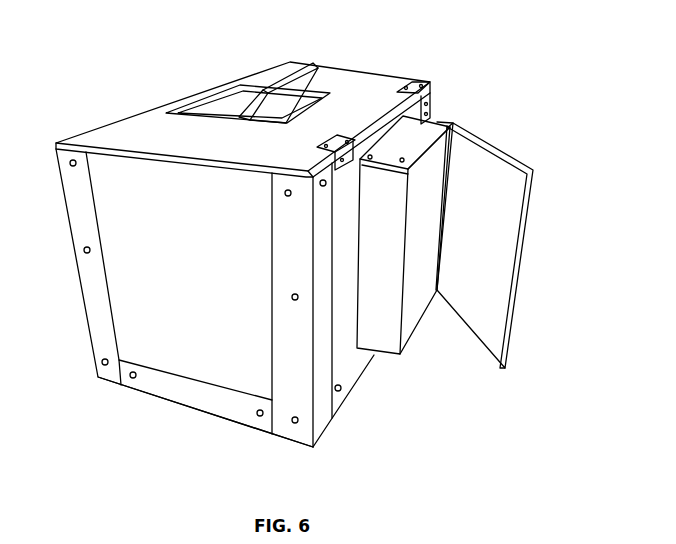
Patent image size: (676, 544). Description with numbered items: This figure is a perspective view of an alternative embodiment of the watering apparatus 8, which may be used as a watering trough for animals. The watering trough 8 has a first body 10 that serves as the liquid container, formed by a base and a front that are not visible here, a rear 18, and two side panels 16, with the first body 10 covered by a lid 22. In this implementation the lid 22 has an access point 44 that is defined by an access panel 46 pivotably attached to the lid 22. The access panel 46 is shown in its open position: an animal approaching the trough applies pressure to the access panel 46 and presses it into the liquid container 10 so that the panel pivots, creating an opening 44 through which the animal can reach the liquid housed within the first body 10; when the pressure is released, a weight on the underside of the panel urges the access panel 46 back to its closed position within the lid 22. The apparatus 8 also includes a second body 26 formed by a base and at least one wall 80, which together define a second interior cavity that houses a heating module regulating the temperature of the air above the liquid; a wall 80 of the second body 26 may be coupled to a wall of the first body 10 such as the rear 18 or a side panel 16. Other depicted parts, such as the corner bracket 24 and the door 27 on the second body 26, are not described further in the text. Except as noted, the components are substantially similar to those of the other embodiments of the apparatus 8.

The watering apparatus 8 is at (129, 386).
The first body 10 is at (309, 236).
The side panels 16 is at (200, 355).
The rear 18 is at (343, 353).
The lid 22 is at (243, 93).
The corner bracket 24 is at (404, 80).
The second body 26 is at (426, 125).
The door 27 is at (518, 263).
The access point 44 is at (232, 82).
The access panel 46 is at (298, 62).
The wall 80 is at (377, 357).